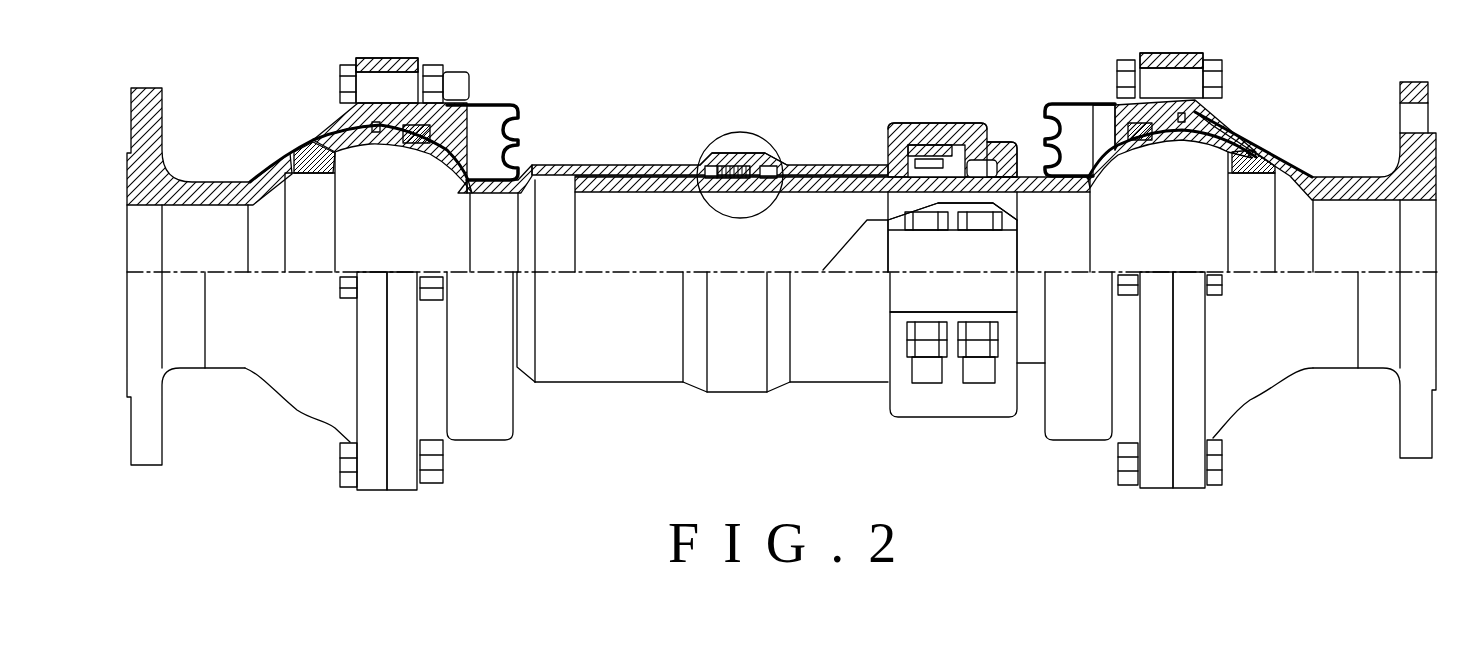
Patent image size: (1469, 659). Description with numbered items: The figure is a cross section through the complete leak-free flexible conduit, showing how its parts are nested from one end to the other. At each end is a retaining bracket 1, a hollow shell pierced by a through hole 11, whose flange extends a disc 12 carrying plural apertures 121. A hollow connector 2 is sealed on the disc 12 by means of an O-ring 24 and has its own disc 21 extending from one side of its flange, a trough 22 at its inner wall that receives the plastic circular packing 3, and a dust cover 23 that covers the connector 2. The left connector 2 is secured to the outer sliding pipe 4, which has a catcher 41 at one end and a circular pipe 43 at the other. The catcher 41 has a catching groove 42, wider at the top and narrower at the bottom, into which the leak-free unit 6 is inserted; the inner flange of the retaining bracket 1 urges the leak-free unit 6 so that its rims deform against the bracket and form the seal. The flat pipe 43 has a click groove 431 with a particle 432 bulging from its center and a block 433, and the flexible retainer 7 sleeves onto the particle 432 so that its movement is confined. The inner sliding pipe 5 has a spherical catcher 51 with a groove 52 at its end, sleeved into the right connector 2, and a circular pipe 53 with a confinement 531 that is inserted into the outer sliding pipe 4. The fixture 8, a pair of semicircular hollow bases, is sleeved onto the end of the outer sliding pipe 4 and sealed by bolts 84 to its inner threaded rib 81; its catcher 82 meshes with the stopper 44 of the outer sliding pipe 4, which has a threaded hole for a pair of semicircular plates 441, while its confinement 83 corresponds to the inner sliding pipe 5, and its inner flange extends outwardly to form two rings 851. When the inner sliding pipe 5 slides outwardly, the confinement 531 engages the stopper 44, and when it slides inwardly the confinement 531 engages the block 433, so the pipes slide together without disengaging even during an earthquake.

The retaining bracket 1 is at (195, 182).
The through hole 11 is at (258, 205).
The disc 12 is at (368, 58).
The apertures 121 is at (380, 60).
The connector 2 is at (458, 120).
The disc 21 is at (415, 65).
The trough 22 is at (375, 122).
The dust cover 23 is at (517, 127).
The O-ring 24 is at (403, 128).
The packing 3 is at (450, 100).
The outer sliding pipe 4 is at (642, 118).
The catcher 41 is at (515, 167).
The catching groove 42 is at (310, 177).
The circular pipe 43 is at (638, 163).
The click groove 431 is at (712, 173).
The particle 432 is at (757, 163).
The block 433 is at (775, 167).
The stopper 44 is at (915, 143).
The semicircular plates 441 is at (935, 143).
The inner sliding pipe 5 is at (1307, 125).
The spherical catcher 51 is at (1212, 133).
The groove 52 is at (1277, 160).
The circular pipe 53 is at (1035, 182).
The confinement 531 is at (832, 165).
The leak-free unit 6 is at (305, 152).
The retainer 7 is at (740, 160).
The fixture 8 is at (895, 125).
The inner threaded rib 81 is at (907, 247).
The catcher 82 is at (888, 125).
The confinement 83 is at (1007, 172).
The bolts 84 is at (977, 375).
The rings 851 is at (977, 135).